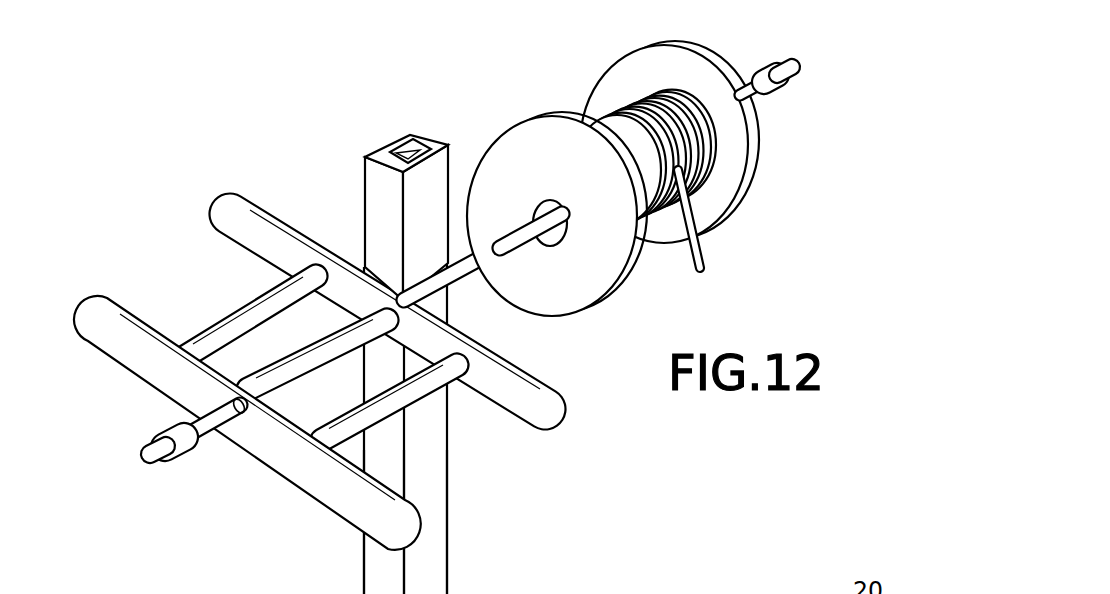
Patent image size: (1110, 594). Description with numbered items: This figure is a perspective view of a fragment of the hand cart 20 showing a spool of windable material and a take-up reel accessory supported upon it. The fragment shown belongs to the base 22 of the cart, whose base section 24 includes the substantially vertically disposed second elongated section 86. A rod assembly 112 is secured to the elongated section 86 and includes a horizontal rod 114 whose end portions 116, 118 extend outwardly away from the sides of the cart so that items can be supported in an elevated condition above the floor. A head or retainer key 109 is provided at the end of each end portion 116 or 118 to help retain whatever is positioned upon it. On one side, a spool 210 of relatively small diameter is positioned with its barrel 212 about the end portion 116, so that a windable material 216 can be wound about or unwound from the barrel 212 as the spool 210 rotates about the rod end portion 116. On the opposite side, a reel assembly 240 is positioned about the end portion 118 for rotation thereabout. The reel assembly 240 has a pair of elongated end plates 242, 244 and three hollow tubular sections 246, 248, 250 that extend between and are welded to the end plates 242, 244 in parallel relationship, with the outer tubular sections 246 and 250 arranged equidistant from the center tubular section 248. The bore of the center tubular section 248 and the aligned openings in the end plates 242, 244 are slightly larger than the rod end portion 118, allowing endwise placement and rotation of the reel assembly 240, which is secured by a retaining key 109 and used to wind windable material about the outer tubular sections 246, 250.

The hand cart 20 is at (204, 152).
The base 22 is at (448, 570).
The base section 24 is at (447, 477).
The second elongated section 86 is at (377, 183).
The retainer key 109 is at (768, 72).
The rod assembly 112 is at (470, 273).
The rod 114 is at (252, 437).
The end portion 116 is at (557, 253).
The end portion 118 is at (167, 425).
The spool 210 is at (747, 163).
The barrel 212 is at (557, 254).
The windable material 216 is at (703, 268).
The reel assembly 240 is at (97, 318).
The end plate 242 is at (340, 510).
The end plate 244 is at (520, 423).
The tubular section 246 is at (240, 310).
The center tubular section 248 is at (363, 330).
The tubular section 250 is at (387, 398).